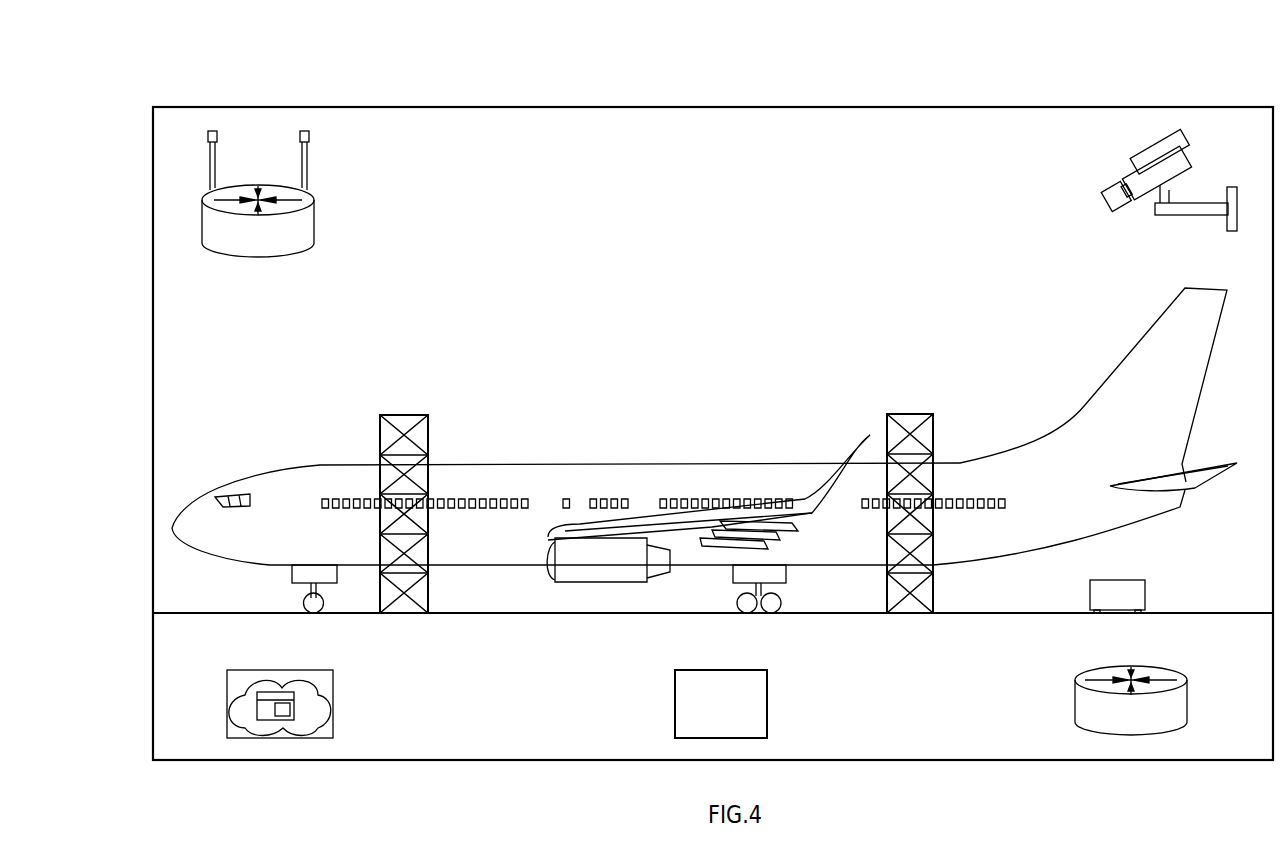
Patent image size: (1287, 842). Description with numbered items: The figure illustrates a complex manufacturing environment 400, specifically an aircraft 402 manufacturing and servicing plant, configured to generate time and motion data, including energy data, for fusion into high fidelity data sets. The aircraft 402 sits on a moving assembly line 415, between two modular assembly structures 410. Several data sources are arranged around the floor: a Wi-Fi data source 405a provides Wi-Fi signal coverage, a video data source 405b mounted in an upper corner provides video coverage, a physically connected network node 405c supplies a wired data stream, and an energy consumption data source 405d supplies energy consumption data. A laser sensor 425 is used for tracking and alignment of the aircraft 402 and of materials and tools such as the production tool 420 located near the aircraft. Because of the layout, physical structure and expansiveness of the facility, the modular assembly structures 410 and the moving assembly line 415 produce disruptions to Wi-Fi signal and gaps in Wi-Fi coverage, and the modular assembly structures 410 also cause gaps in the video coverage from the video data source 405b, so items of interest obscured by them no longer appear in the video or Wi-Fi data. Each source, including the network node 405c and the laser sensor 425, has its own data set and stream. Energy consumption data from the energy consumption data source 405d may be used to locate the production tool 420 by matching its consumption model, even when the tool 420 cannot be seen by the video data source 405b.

The complex manufacturing environment 400 is at (229, 48).
The aircraft 402 is at (768, 463).
The Wi-Fi data source 405a is at (316, 218).
The video data source 405b is at (1156, 152).
The physically connected network node 405c is at (1075, 700).
The energy consumption data source 405d is at (333, 707).
The modular assembly structures 410 is at (405, 414).
The moving assembly line 415 is at (1056, 613).
The production tool 420 is at (1130, 578).
The laser sensor 425 is at (767, 702).